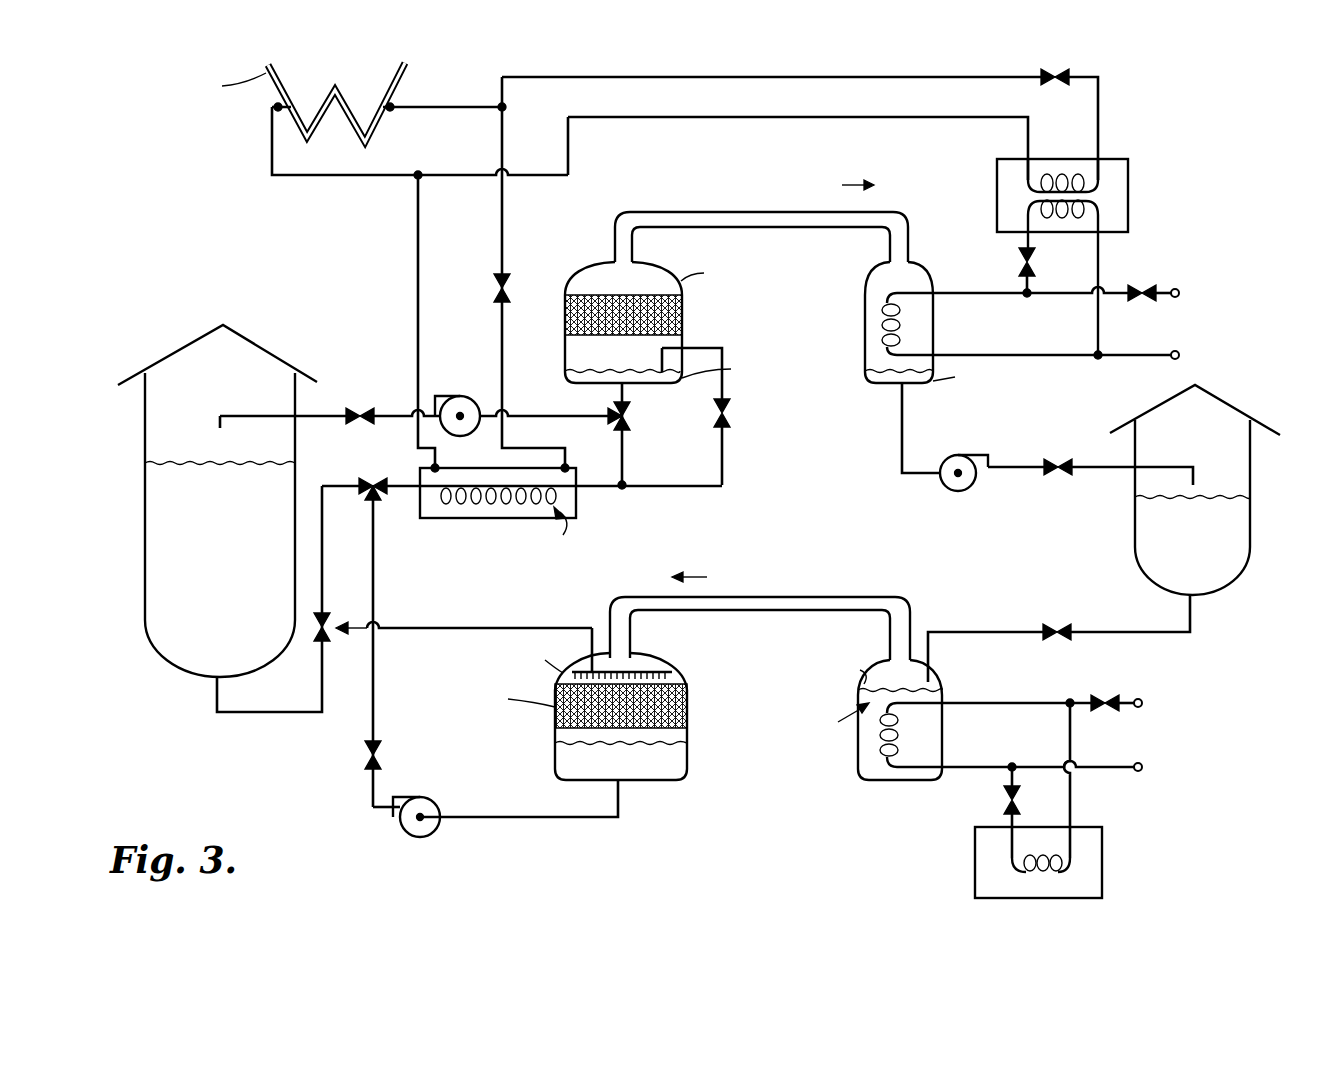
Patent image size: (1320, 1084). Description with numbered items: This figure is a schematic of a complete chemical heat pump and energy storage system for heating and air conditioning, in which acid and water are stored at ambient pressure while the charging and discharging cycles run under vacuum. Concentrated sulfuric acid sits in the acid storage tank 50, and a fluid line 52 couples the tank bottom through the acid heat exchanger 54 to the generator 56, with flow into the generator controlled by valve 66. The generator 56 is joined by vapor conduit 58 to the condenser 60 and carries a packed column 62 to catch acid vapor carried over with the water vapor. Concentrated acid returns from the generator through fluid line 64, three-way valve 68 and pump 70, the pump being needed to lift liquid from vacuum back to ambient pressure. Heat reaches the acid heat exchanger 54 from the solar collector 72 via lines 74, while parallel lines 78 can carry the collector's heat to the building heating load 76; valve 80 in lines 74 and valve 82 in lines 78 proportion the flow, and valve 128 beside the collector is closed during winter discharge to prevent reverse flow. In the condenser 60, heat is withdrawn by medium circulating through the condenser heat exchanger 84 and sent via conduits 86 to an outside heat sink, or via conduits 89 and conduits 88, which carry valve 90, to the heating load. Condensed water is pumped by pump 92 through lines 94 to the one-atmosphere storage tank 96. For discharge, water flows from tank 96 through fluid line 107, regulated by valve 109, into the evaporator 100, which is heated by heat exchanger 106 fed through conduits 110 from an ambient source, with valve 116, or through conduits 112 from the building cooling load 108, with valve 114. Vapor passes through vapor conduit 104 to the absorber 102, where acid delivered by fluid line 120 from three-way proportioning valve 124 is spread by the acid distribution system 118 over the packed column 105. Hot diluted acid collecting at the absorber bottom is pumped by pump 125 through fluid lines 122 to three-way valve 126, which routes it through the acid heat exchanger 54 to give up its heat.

The acid storage tank 50 is at (136, 432).
The fluid line 52 is at (725, 459).
The acid heat exchanger 54 is at (578, 511).
The generator 56 is at (664, 262).
The vapor conduit 58 is at (676, 206).
The condenser 60 is at (906, 214).
The packed column 62 is at (565, 320).
The fluid line 64 is at (631, 392).
The valve 66 is at (735, 411).
The three-way valve 68 is at (633, 429).
The pump 70 is at (462, 398).
The solar collector 72 is at (322, 98).
The lines 74 is at (502, 232).
The building heating load 76 is at (1115, 158).
The lines 78 is at (805, 95).
The valve 80 is at (510, 280).
The valve 82 is at (1045, 72).
The condenser heat exchanger 84 is at (882, 318).
The conduits 86 is at (1067, 355).
The conduits 88 is at (1150, 284).
The conduits 89 is at (1098, 266).
The valve 90 is at (1016, 262).
The pump 92 is at (968, 489).
The lines 94 is at (902, 459).
The storage tank 96 is at (1262, 472).
The evaporator 100 is at (855, 759).
The absorber 102 is at (663, 783).
The vapor conduit 104 is at (721, 612).
The packed column 105 is at (689, 707).
The heat exchanger 106 is at (883, 763).
The fluid line 107 is at (977, 630).
The building cooling load 108 is at (1090, 827).
The valve 109 is at (1053, 620).
The conduits 110 is at (977, 767).
The conduits 112 is at (1068, 799).
The valve 114 is at (1004, 797).
The valve 116 is at (1112, 693).
The acid distribution system 118 is at (643, 668).
The fluid line 120 is at (422, 628).
The fluid lines 122 is at (523, 820).
The three-way proportioning valve 124 is at (317, 634).
The pump 125 is at (417, 838).
The three-way valve 126 is at (372, 477).
The valve 128 is at (448, 105).